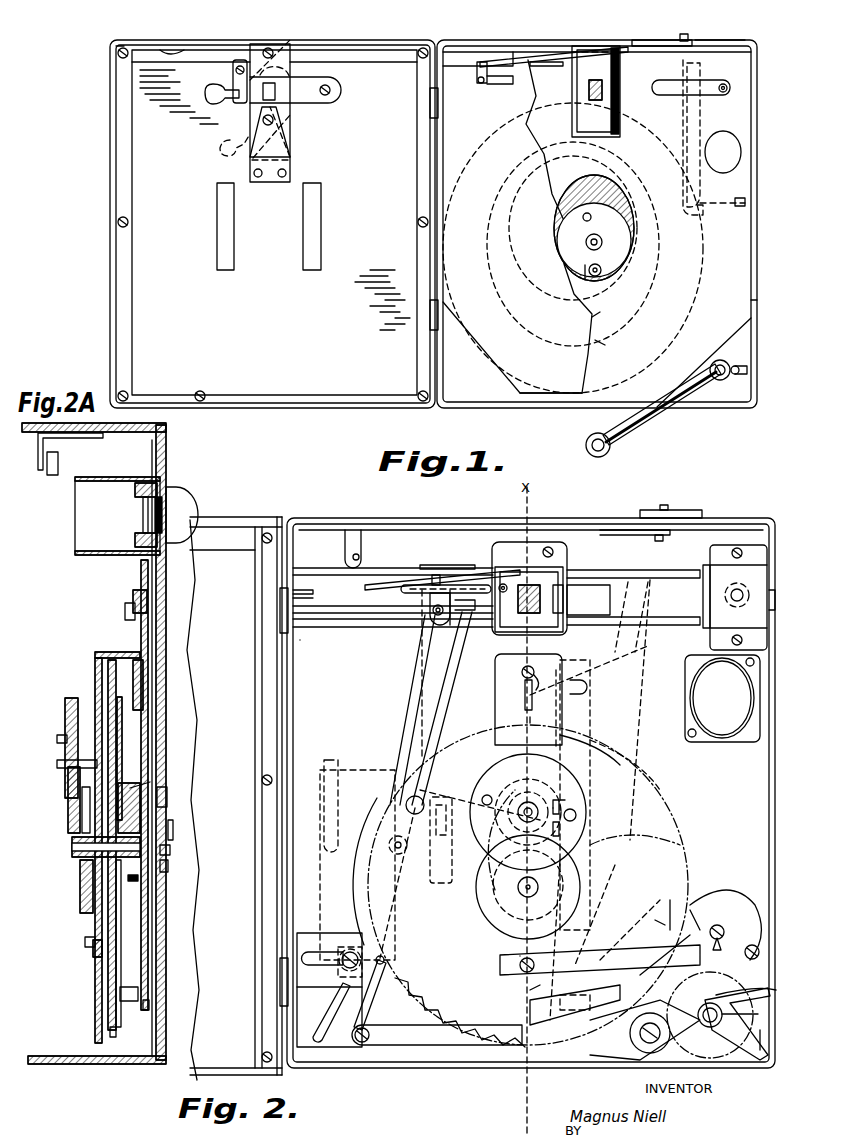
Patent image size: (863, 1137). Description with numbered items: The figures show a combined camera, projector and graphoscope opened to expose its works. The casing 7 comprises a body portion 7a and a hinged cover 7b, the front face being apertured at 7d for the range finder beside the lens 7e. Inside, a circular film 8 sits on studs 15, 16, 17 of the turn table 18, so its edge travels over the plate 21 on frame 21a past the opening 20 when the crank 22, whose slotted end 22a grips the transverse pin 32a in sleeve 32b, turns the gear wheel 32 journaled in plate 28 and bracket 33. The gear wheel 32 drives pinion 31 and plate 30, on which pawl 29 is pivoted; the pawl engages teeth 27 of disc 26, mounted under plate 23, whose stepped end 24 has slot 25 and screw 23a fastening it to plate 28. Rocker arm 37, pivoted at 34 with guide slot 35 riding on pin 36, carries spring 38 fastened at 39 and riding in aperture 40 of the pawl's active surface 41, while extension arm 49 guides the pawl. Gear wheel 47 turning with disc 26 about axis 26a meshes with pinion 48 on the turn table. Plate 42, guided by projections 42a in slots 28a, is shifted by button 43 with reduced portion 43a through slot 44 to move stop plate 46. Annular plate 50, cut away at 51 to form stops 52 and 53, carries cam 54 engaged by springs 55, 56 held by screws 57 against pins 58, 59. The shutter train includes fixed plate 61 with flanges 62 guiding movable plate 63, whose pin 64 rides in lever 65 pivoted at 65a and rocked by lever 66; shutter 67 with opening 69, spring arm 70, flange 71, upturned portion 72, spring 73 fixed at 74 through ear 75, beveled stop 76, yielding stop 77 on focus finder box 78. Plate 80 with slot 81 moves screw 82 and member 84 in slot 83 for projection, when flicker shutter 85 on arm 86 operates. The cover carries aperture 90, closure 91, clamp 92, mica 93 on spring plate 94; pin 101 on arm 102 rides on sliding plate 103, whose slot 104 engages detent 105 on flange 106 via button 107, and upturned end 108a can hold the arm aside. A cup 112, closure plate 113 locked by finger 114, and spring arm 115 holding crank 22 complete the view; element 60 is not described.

In FIG. 2A, the casing 7 is at (166, 457).
In FIG. 1, the body portion 7a is at (548, 404).
In FIG. 2A, the closure or cover 7b is at (198, 800).
In FIG. 2, the aperture 7d is at (755, 602).
In FIG. 2A, the lens 7e is at (185, 496).
In FIG. 1, the circular film 8 is at (455, 182).
In FIG. 1, the stud 15 is at (591, 215).
In FIG. 2A, the stud 15 is at (57, 740).
In FIG. 2, the stud 15 is at (488, 800).
In FIG. 1, the stud 16 is at (602, 238).
In FIG. 2A, the stud 16 is at (57, 765).
In FIG. 2, the stud 16 is at (534, 806).
In FIG. 1, the stud 17 is at (603, 270).
In FIG. 2, the stud 17 is at (578, 818).
In FIG. 1, the turn table 18 is at (588, 280).
In FIG. 2A, the turn table 18 is at (68, 806).
In FIG. 1, the opening 20 is at (587, 90).
In FIG. 1, the plate 21 is at (598, 60).
In FIG. 2, the frame 21a is at (540, 585).
In FIG. 1, the crank 22 is at (700, 118).
In FIG. 1, the slot 22a is at (746, 203).
In FIG. 2A, the plate 23 is at (95, 655).
In FIG. 2, the plate 23 is at (500, 676).
In FIG. 2A, the screw 23a is at (133, 598).
In FIG. 2, the stepped-down end 24 is at (532, 690).
In FIG. 2A, the elongated slot 25 is at (125, 612).
In FIG. 2, the elongated slot 25 is at (570, 685).
In FIG. 1, the disc 26 is at (607, 350).
In FIG. 2A, the disc 26 is at (110, 1012).
In FIG. 2, the disc 26 is at (440, 1030).
In FIG. 2A, the axis 26a is at (85, 852).
In FIG. 2, the axis 26a is at (560, 885).
In FIG. 2A, the teeth 27 is at (110, 1033).
In FIG. 2, the teeth 27 is at (420, 1030).
In FIG. 2A, the plate 28 is at (148, 576).
In FIG. 2, the plate 28 is at (560, 640).
In FIG. 2, the slots 28a is at (640, 670).
In FIG. 2, the pawl 29 is at (620, 1045).
In FIG. 2, the plate 30 is at (680, 1005).
In FIG. 2, the pinion 31 is at (675, 1040).
In FIG. 2, the gear wheel 32 is at (760, 1050).
In FIG. 2, the transverse pin 32a is at (758, 1014).
In FIG. 2, the sleeve 32b is at (760, 990).
In FIG. 2, the bracket 33 is at (737, 1024).
In FIG. 2, the pivot 34 is at (765, 905).
In FIG. 2, the curved guide slot 35 is at (752, 945).
In FIG. 2, the screw or pin 36 is at (720, 925).
In FIG. 2A, the rocker arm 37 is at (88, 948).
In FIG. 2, the rocker arm 37 is at (670, 900).
In FIG. 2, the spring 38 is at (520, 990).
In FIG. 2, the fastening point 39 is at (697, 910).
In FIG. 2, the aperture 40 is at (480, 1035).
In FIG. 2, the active surface 41 is at (535, 1035).
In FIG. 2A, the plate 42 is at (168, 866).
In FIG. 2, the plate 42 is at (580, 695).
In FIG. 2, the projections 42a is at (528, 665).
In FIG. 2A, the button 43 is at (173, 830).
In FIG. 2A, the reduced portion 43a is at (172, 798).
In FIG. 2A, the slot 44 is at (170, 850).
In FIG. 2A, the stop plate 46 is at (140, 685).
In FIG. 2, the stop plate 46 is at (590, 740).
In FIG. 2A, the gear wheel 47 is at (80, 900).
In FIG. 2, the gear wheel 47 is at (480, 902).
In FIG. 2A, the pinion 48 is at (65, 715).
In FIG. 2, the pinion 48 is at (470, 830).
In FIG. 2, the extension arm 49 is at (600, 998).
In FIG. 2A, the annular plate 50 is at (100, 958).
In FIG. 2, the cut-away portion 51 is at (650, 840).
In FIG. 1, the peripheral stop 52 is at (593, 170).
In FIG. 2A, the peripheral stop 52 is at (117, 720).
In FIG. 2, the peripheral stop 52 is at (528, 800).
In FIG. 1, the peripheral stop 53 is at (600, 315).
In FIG. 2A, the peripheral stop 53 is at (125, 1003).
In FIG. 2, the peripheral stop 53 is at (575, 1009).
In FIG. 2A, the cam 54 is at (130, 807).
In FIG. 2, the cam 54 is at (538, 882).
In FIG. 2A, the spring 55 is at (150, 782).
In FIG. 2, the spring 55 is at (480, 800).
In FIG. 2A, the spring 56 is at (138, 880).
In FIG. 2, the spring 56 is at (610, 900).
In FIG. 2, the screws 57 is at (405, 803).
In FIG. 2, the pin 58 is at (610, 750).
In FIG. 2A, the pin 59 is at (150, 1008).
In FIG. 2, the pin 59 is at (580, 1000).
In FIG. 2, the lever 60 is at (522, 725).
In FIG. 2A, the fixed plate 61 is at (163, 505).
In FIG. 2, the fixed plate 61 is at (355, 610).
In FIG. 2A, the U-shaped flanges 62 is at (133, 542).
In FIG. 2, the U-shaped flanges 62 is at (327, 575).
In FIG. 2A, the movable plate 63 is at (143, 512).
In FIG. 2, the pin 64 is at (432, 615).
In FIG. 2, the lever 65 is at (400, 688).
In FIG. 2, the pivot 65a is at (385, 960).
In FIG. 2, the lever 66 is at (380, 1048).
In FIG. 2A, the shutter 67 is at (133, 492).
In FIG. 2, the shutter 67 is at (715, 597).
In FIG. 2, the exposure opening 69 is at (595, 583).
In FIG. 2, the spring arm 70 is at (520, 578).
In FIG. 2, the depending flange 71 is at (405, 590).
In FIG. 2, the upturned portion 72 is at (450, 588).
In FIG. 2, the shutter actuating spring 73 is at (430, 655).
In FIG. 2, the fixing point 74 is at (390, 848).
In FIG. 2, the upturned ear 75 is at (470, 610).
In FIG. 2A, the stop 76 is at (178, 420).
In FIG. 2, the stop 76 is at (300, 594).
In FIG. 2, the yielding stop 77 is at (725, 590).
In FIG. 2, the focus finder box 78 is at (752, 643).
In FIG. 2, the plate 80 is at (352, 775).
In FIG. 2, the slot 81 is at (298, 1003).
In FIG. 2, the screw 82 is at (360, 910).
In FIG. 2, the slot 83 is at (300, 953).
In FIG. 2, the member 84 is at (380, 968).
In FIG. 2, the flicker shutter 85 is at (635, 580).
In FIG. 2, the arm 86 is at (632, 705).
In FIG. 1, the aperture 90 is at (300, 50).
In FIG. 1, the closure 91 is at (232, 100).
In FIG. 1, the spring clamp 92 is at (240, 86).
In FIG. 1, the mica 93 is at (282, 150).
In FIG. 1, the spring plate 94 is at (295, 115).
In FIG. 1, the pin 101 is at (478, 85).
In FIG. 2A, the pin 101 is at (52, 470).
In FIG. 2, the pin 101 is at (361, 557).
In FIG. 1, the arm 102 is at (505, 60).
In FIG. 2A, the arm 102 is at (85, 438).
In FIG. 2, the arm 102 is at (445, 560).
In FIG. 1, the plate 103 is at (680, 46).
In FIG. 2, the plate 103 is at (700, 526).
In FIG. 1, the slot 104 is at (730, 43).
In FIG. 2, the slot 104 is at (705, 524).
In FIG. 1, the detent 105 is at (183, 50).
In FIG. 1, the flange 106 is at (142, 37).
In FIG. 1, the finger button 107 is at (688, 36).
In FIG. 1, the upturned end 108a is at (553, 62).
In FIG. 2, the upturned end 108a is at (420, 565).
In FIG. 2, the cup 112 is at (718, 742).
In FIG. 1, the closure plate 113 is at (735, 300).
In FIG. 1, the finger 114 is at (745, 370).
In FIG. 1, the spring arm 115 is at (715, 84).